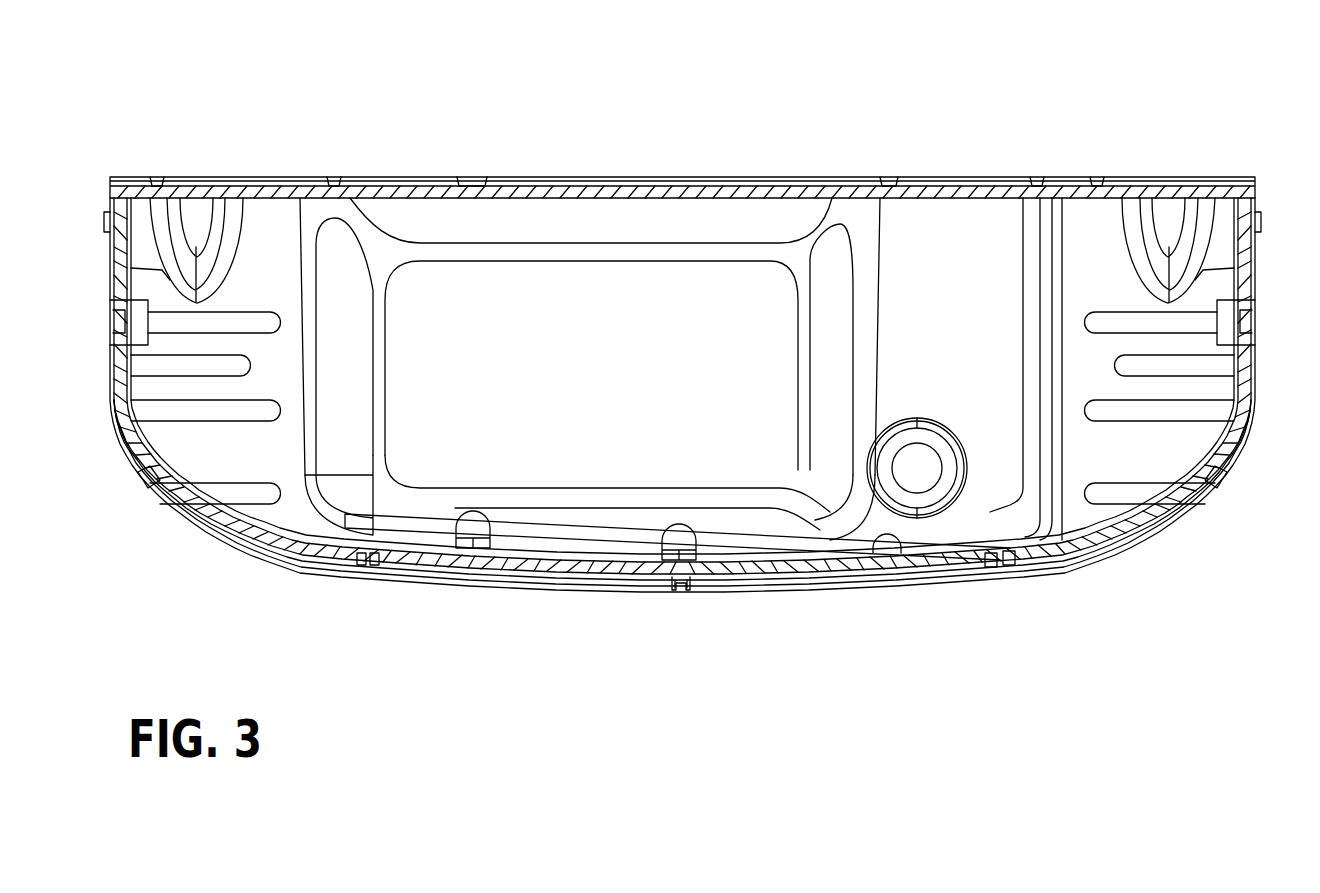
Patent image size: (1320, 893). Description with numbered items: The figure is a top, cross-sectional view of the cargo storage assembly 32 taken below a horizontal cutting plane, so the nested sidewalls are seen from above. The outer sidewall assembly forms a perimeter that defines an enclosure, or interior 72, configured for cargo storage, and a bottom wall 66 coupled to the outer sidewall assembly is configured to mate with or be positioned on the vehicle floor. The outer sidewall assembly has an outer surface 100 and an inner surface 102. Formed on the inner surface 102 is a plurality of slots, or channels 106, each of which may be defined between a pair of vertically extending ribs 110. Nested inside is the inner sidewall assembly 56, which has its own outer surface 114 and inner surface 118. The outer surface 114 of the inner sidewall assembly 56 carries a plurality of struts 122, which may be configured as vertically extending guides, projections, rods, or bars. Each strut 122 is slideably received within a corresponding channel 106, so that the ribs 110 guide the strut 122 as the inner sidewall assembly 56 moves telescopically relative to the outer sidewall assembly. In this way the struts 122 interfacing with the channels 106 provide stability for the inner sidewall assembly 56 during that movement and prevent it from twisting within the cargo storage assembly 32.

The cargo storage assembly 32 is at (1097, 135).
The inner sidewall assembly 56 is at (940, 195).
The bottom wall 66 is at (609, 321).
The interior 72 is at (942, 333).
The outer surface 100 is at (1236, 472).
The inner surface 102 is at (1250, 438).
The channel 106 is at (688, 590).
The vertically extending rib 110 is at (988, 572).
The outer surface 114 is at (368, 530).
The inner surface 118 is at (248, 556).
The strut 122 is at (148, 478).